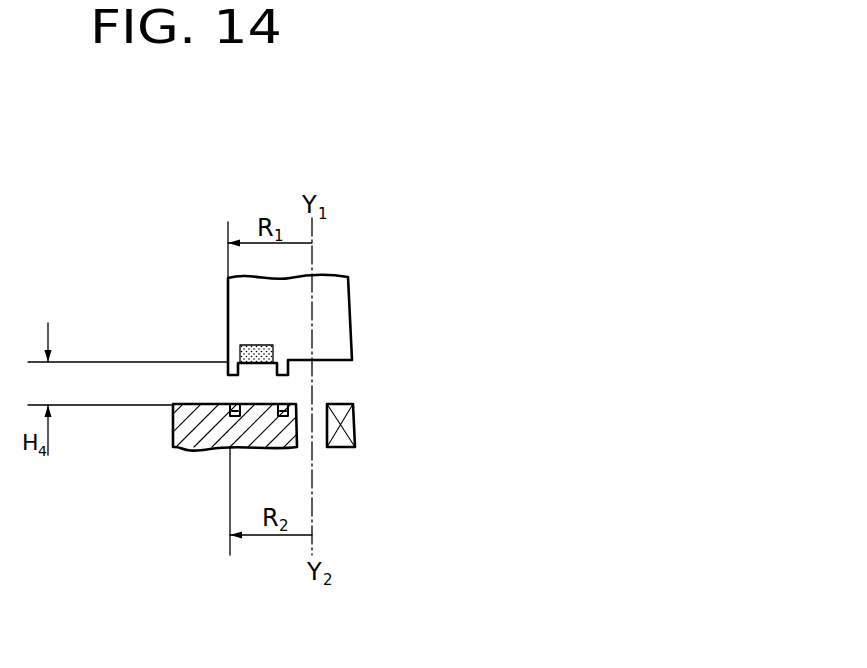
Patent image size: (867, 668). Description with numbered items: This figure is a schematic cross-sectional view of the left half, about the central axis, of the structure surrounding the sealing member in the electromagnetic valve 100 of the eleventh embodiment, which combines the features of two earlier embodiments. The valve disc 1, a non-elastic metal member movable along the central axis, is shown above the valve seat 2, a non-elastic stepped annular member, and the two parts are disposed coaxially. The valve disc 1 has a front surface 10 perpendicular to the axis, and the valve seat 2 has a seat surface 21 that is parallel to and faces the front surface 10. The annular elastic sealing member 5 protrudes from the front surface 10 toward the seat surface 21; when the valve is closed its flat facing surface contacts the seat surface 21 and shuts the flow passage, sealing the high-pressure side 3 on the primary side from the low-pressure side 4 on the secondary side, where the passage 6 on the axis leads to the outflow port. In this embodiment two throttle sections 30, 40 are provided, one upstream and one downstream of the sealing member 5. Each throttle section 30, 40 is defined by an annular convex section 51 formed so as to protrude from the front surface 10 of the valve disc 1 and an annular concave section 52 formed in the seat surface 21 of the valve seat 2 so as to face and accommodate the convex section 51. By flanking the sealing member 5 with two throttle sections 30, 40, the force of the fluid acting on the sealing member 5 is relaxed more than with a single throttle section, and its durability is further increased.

The electromagnetic valve 100 is at (404, 198).
The valve disc 1 is at (337, 302).
The valve seat 2 is at (358, 433).
The high-pressure side 3 is at (184, 327).
The low-pressure side 4 is at (352, 448).
The sealing member 5 is at (274, 345).
The passage 6 is at (296, 447).
The front surface 10 is at (350, 361).
The seat surface 21 is at (212, 403).
The throttle section 30 is at (82, 260).
The throttle section 40 is at (520, 352).
The convex section 51 is at (233, 373).
The concave section 52 is at (232, 404).